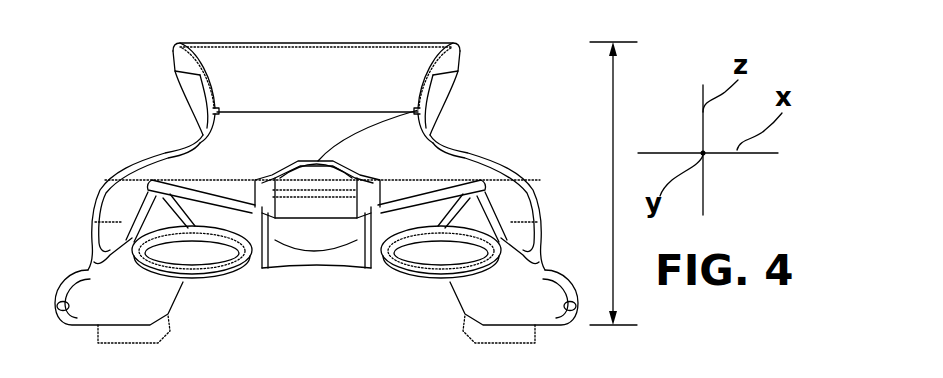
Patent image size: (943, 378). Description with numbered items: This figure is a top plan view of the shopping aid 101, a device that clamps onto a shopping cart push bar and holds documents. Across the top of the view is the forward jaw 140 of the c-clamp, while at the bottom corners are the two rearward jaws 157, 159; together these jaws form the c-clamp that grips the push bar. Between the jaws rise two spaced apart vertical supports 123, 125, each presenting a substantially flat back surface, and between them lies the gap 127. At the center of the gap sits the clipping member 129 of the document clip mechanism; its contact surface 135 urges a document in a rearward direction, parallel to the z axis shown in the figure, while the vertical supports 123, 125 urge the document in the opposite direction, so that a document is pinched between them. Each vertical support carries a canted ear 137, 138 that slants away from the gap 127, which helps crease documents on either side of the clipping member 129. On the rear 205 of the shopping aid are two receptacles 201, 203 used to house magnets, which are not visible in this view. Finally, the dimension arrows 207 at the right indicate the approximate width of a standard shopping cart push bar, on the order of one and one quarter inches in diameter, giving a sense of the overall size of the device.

The shopping aid 101 is at (138, 55).
The forward jaw of the c-clamp 140 is at (225, 42).
The vertical support 125 is at (178, 180).
The canted ear 138 is at (207, 187).
The clipping member 129 is at (418, 110).
The canted ear 137 is at (427, 183).
The vertical support 123 is at (482, 155).
The dimension arrows 207 is at (612, 127).
The rearward jaw of the c-clamp 157 is at (103, 320).
The receptacle 201 is at (188, 255).
The rear of the shopping aid 205 is at (255, 324).
The gap 127 is at (313, 252).
The contact surface of the clipping member 135 is at (368, 268).
The receptacle 203 is at (438, 255).
The rearward jaw of the c-clamp 159 is at (533, 313).